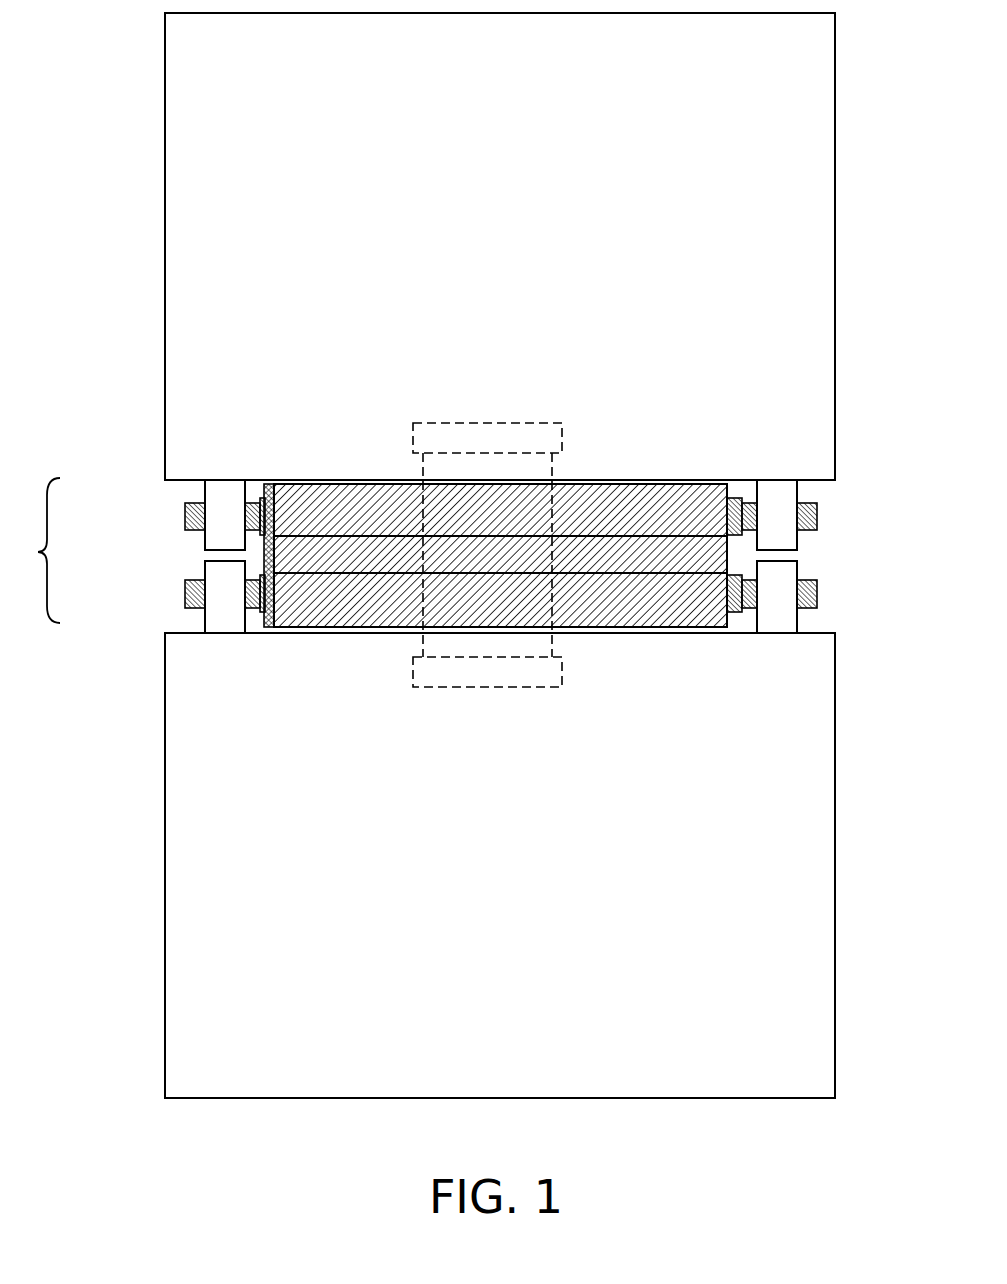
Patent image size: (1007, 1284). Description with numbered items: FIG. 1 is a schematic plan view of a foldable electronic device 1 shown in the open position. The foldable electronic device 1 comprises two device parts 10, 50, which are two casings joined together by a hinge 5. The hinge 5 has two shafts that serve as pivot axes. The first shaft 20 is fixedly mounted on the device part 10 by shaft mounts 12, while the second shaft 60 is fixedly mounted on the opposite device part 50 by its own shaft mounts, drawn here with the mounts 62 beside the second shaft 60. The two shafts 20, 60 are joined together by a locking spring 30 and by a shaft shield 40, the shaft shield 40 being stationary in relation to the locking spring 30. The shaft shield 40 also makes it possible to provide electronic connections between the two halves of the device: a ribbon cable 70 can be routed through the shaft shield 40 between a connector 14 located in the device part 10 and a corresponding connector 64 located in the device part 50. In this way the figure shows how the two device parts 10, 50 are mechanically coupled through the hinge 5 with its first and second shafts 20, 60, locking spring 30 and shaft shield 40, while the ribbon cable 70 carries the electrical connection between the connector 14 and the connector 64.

The foldable electronic device 1 is at (125, 359).
The hinge 5 is at (39, 550).
The device part 10 is at (825, 265).
The shaft mounts 12 is at (225, 487).
The connector 14 is at (463, 428).
The first shaft 20 is at (185, 517).
The locking spring 30 is at (270, 632).
The shaft shield 40 is at (648, 567).
The device part 50 is at (826, 808).
The second shaft 60 is at (185, 593).
The lower posts 62 is at (225, 625).
The lower element (dashed) 64 is at (463, 685).
The ribbon cable 70 is at (553, 643).